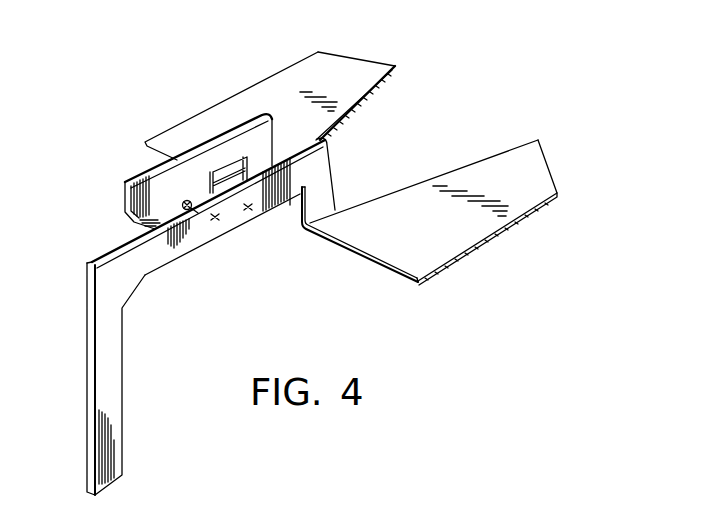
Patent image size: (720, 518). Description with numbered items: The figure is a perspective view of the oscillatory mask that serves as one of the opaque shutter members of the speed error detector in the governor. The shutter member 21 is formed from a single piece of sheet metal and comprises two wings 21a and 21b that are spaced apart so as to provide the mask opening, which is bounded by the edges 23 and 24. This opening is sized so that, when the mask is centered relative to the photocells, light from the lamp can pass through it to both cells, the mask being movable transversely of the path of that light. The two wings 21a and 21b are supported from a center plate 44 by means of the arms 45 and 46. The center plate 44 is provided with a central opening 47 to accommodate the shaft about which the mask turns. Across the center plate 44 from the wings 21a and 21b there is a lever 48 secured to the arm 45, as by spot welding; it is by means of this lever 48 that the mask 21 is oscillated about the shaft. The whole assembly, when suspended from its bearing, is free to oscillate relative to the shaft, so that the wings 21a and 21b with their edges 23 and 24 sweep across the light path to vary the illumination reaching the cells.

The shutter member 21 is at (376, 266).
The wing 21a is at (439, 250).
The wing 21b is at (322, 88).
The edge 23 is at (421, 182).
The edge 24 is at (363, 100).
The center plate 44 is at (134, 222).
The arm 45 is at (322, 186).
The arm 46 is at (262, 138).
The central opening 47 is at (183, 202).
The lever 48 is at (107, 425).